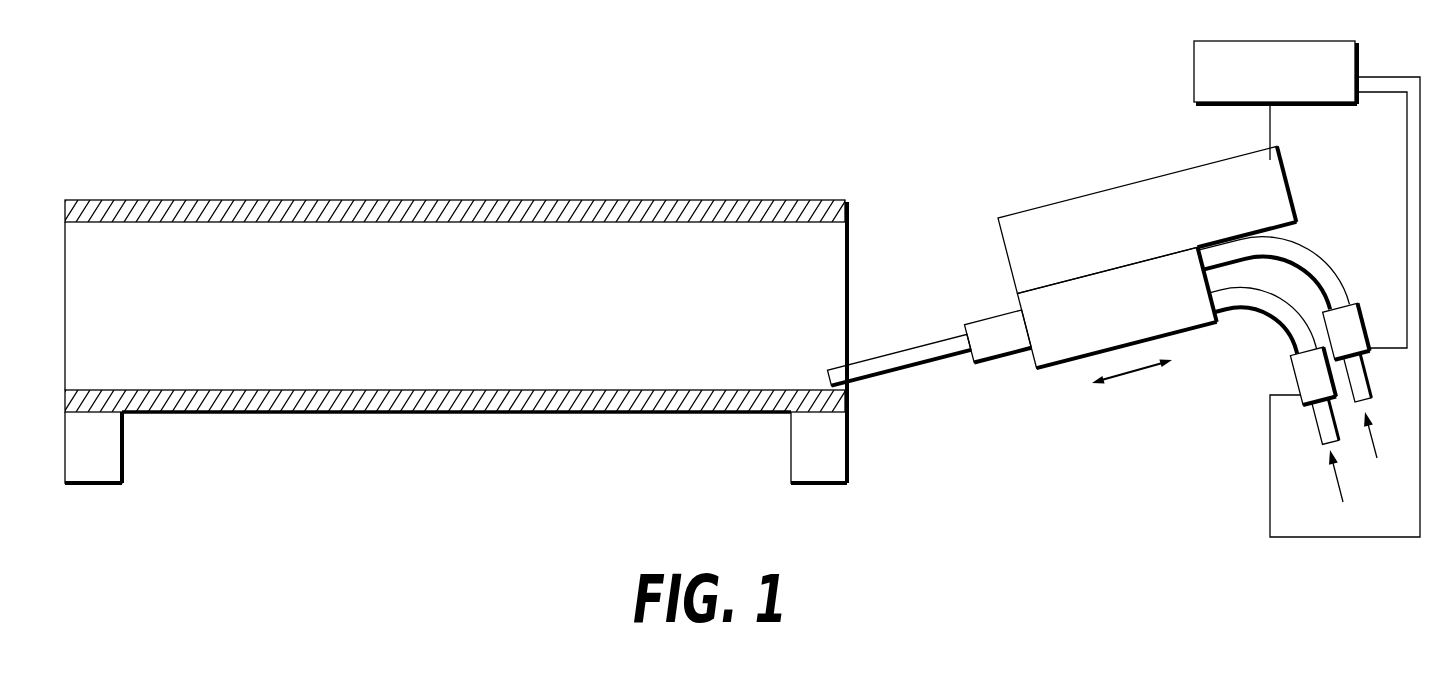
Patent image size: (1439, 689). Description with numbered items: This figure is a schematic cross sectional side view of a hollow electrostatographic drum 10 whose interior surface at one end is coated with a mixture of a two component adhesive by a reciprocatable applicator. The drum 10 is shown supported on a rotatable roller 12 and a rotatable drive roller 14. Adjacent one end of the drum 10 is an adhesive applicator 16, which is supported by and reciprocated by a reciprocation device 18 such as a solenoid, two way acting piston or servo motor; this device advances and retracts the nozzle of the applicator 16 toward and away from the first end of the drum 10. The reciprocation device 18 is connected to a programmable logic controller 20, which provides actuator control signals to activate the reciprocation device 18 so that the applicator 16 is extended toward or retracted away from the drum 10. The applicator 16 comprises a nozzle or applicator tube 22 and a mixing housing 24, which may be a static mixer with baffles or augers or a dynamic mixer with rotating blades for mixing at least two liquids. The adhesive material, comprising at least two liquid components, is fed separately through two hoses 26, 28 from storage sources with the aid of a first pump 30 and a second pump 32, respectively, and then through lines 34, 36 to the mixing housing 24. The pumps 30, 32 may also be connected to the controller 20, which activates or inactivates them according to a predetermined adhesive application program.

The hollow electrostatographic drum 10 is at (393, 198).
The rotatable roller 12 is at (123, 452).
The rotatable drive roller 14 is at (790, 452).
The adhesive applicator 16 is at (1116, 324).
The reciprocation device 18 is at (1050, 203).
The programmable logic controller 20 is at (1270, 40).
The nozzle or applicator tube 22 is at (862, 360).
The mixing housing 24 is at (1032, 365).
The hose 26 is at (1365, 368).
The hose 28 is at (1312, 420).
The first pump 30 is at (1348, 302).
The second pump 32 is at (1292, 372).
The line 34 is at (1305, 257).
The line 36 is at (1263, 320).